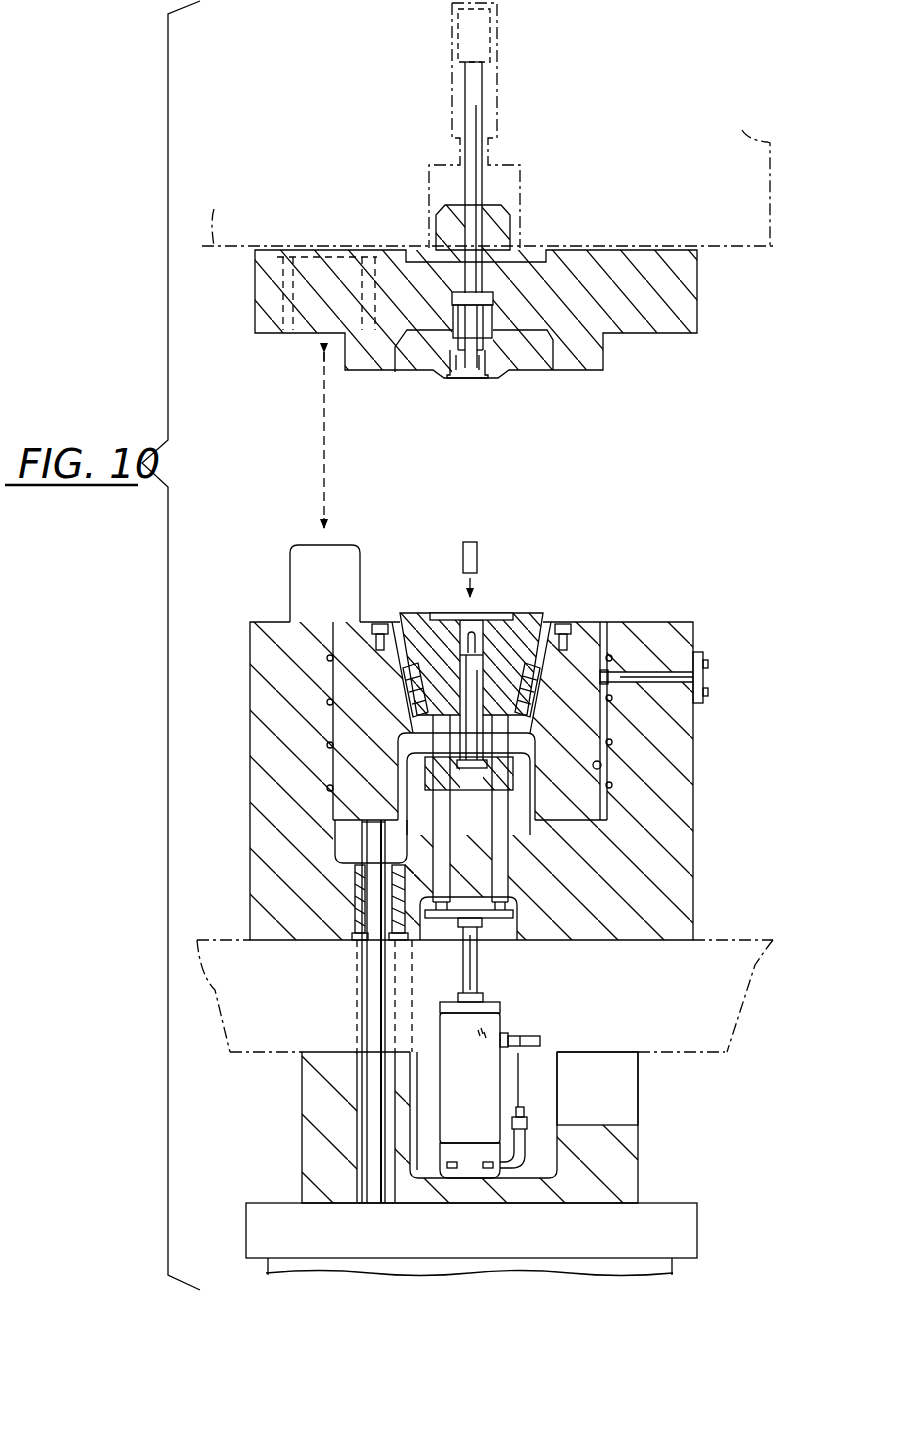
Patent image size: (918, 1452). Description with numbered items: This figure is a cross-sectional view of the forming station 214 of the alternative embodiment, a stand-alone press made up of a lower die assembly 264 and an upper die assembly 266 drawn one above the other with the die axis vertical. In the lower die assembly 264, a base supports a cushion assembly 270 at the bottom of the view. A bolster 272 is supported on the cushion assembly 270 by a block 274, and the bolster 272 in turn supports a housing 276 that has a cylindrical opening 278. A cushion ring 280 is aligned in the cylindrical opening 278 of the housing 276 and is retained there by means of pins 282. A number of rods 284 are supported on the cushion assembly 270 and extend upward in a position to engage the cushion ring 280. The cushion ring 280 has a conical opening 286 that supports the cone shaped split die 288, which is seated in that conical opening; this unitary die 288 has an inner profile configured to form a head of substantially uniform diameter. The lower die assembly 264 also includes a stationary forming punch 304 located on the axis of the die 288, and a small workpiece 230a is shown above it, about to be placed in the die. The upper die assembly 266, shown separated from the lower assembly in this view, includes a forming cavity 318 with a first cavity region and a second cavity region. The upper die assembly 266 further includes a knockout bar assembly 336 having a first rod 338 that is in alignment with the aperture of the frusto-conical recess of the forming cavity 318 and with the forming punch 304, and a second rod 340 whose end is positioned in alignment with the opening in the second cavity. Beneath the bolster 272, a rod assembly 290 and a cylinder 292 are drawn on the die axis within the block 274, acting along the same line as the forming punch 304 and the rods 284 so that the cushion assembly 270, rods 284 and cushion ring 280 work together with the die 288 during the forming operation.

The forming station 214 is at (773, 80).
The upper die assembly 266 is at (724, 363).
The knockout bar assembly 336 is at (493, 298).
The second rod 340 is at (453, 318).
The first rod 338 is at (478, 325).
The forming cavity 318 is at (460, 382).
The workpiece blank 230a is at (480, 538).
The lower die assembly 264 is at (510, 910).
The housing 276 is at (693, 823).
The cushion ring 280 is at (597, 620).
The conical opening 286 is at (400, 667).
The cone shaped split die 288 is at (535, 612).
The stationary forming punch 304 is at (427, 625).
The pins 282 is at (660, 672).
The cylindrical opening 278 is at (603, 768).
The ejector rod assembly 290 is at (500, 885).
The hydraulic cylinder 292 is at (482, 1092).
The bolster 272 is at (733, 1002).
The rods 284 is at (360, 1020).
The block 274 is at (623, 1163).
The cushion assembly 270 is at (690, 1228).